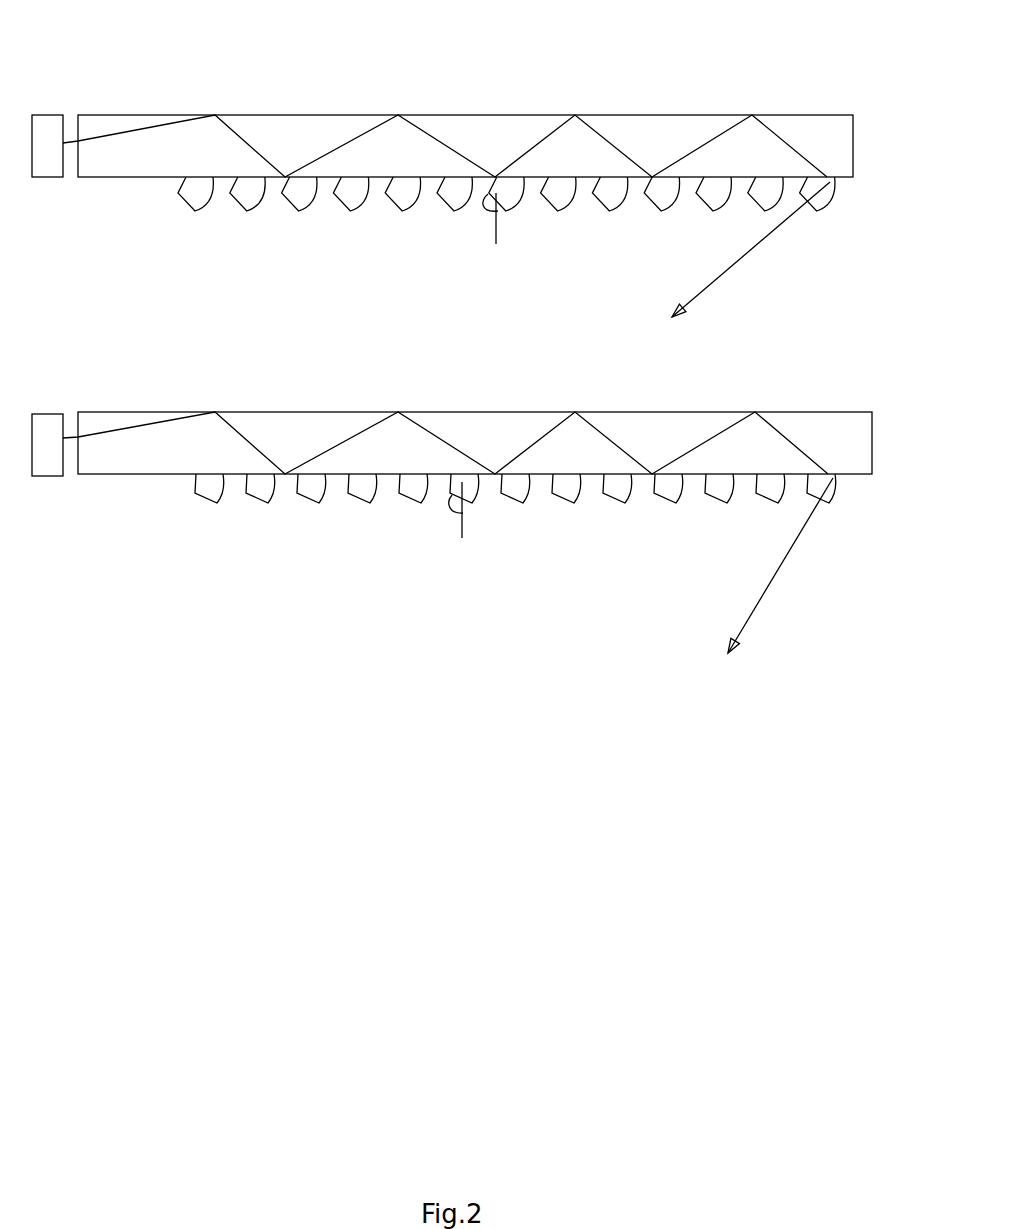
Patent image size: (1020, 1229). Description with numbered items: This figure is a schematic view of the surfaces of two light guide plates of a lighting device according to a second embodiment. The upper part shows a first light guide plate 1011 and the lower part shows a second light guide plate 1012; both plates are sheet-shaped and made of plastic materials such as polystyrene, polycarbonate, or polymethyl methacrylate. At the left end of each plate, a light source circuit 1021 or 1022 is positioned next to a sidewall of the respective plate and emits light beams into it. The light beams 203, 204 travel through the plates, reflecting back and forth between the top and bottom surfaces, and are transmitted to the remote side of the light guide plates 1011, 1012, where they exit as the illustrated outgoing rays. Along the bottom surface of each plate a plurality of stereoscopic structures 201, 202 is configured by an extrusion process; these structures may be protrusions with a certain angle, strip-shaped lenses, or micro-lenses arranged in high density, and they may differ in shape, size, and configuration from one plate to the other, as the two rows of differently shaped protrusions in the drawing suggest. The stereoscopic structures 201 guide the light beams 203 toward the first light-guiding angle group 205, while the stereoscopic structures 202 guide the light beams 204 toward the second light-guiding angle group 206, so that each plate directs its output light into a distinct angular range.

The light source circuit 1021 is at (48, 127).
The light guide plate 1011 is at (280, 127).
The stereoscopic structures 201 is at (305, 192).
The first light-guiding angle group 205 is at (483, 203).
The light beam 203 is at (753, 252).
The light source circuit 1022 is at (48, 427).
The light guide plate 1012 is at (275, 428).
The stereoscopic structures 202 is at (317, 487).
The second light-guiding angle group 206 is at (451, 503).
The light beam 204 is at (783, 572).